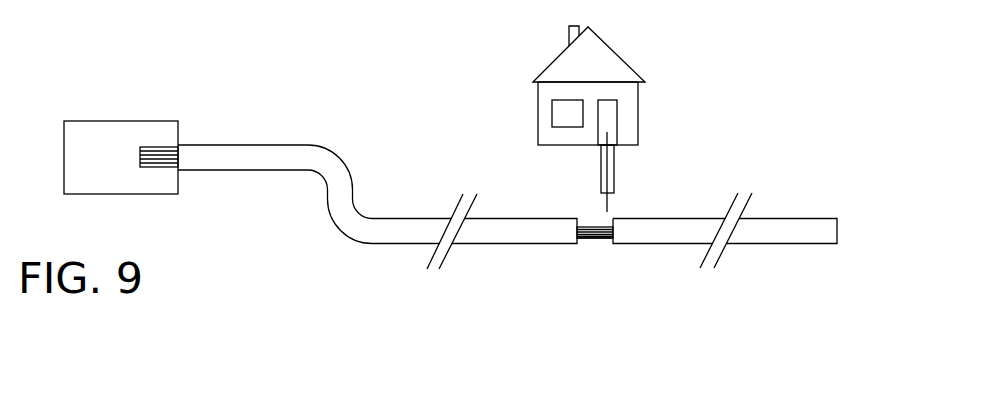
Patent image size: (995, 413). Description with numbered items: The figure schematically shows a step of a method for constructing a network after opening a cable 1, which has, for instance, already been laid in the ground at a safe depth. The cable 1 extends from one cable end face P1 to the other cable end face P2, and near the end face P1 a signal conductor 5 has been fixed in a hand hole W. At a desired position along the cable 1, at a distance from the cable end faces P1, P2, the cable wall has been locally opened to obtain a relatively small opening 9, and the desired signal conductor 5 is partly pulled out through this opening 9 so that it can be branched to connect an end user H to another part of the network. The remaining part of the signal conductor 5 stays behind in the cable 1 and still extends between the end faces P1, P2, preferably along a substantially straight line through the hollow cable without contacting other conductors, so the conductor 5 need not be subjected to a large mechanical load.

The cable 1 is at (252, 145).
The signal conductor 5 is at (152, 167).
The opening 9 is at (592, 250).
The hand hole W is at (77, 126).
The end user H is at (614, 64).
The cable end face P1 is at (189, 187).
The cable end face P2 is at (846, 258).